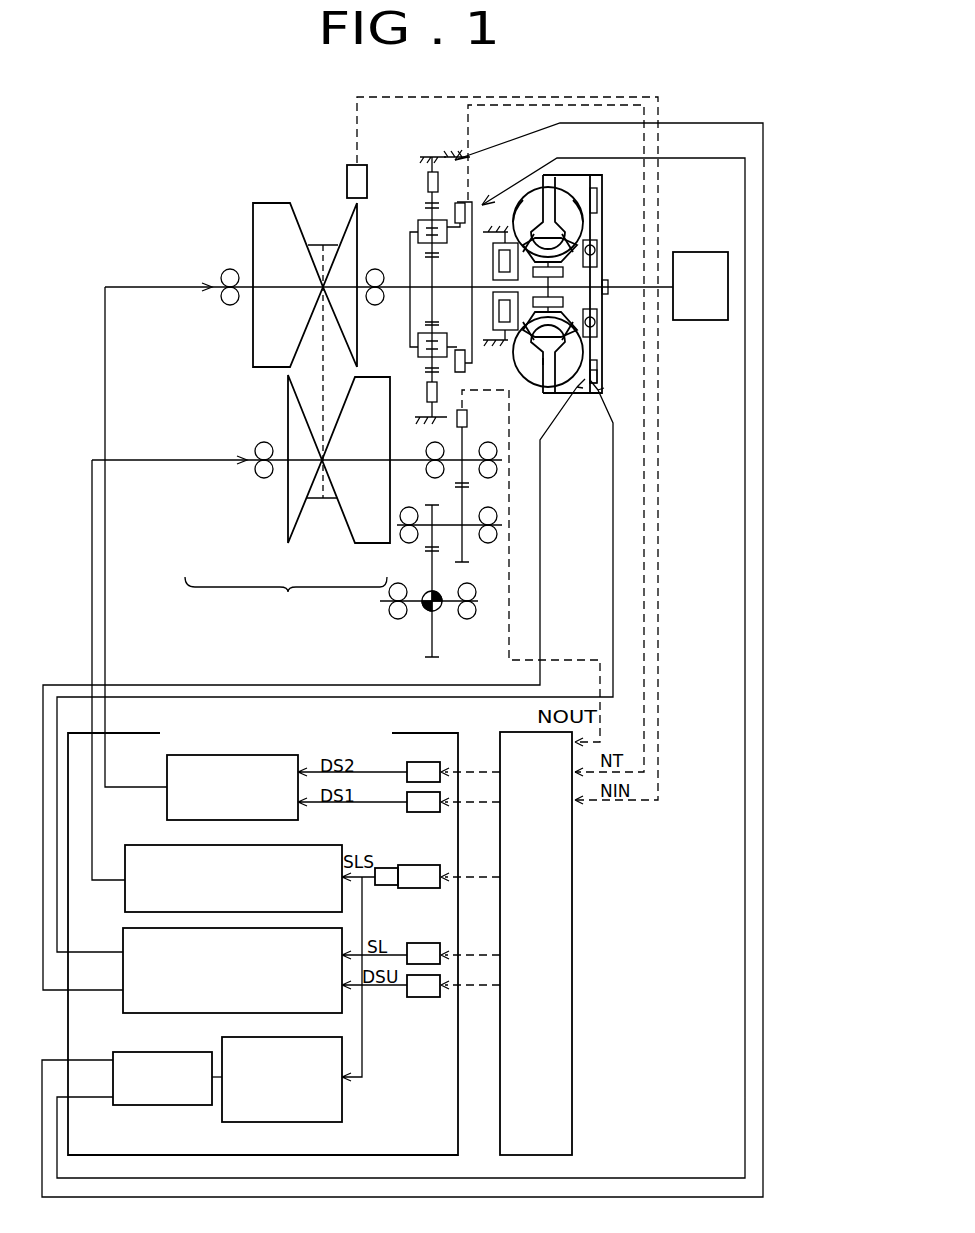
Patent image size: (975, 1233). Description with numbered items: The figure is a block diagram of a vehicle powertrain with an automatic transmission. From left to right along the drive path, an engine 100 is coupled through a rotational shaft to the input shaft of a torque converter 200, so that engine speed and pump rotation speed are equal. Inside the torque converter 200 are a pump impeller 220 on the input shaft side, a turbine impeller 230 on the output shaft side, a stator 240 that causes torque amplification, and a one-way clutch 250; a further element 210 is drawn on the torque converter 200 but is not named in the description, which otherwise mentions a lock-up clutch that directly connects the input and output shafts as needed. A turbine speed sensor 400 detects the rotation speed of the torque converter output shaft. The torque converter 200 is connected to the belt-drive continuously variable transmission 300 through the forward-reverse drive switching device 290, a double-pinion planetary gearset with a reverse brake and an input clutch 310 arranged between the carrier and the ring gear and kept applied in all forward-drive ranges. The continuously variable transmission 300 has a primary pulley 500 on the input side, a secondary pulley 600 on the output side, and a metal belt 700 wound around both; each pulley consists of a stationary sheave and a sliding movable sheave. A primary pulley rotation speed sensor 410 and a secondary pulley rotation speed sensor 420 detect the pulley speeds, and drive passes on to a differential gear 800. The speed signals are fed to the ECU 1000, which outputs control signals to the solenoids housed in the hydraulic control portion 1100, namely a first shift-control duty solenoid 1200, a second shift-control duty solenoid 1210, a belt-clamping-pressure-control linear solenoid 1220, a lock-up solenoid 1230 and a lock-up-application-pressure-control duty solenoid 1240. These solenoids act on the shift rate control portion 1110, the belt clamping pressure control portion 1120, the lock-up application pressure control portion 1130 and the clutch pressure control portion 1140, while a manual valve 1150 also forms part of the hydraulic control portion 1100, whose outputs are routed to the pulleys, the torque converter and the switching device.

The engine 100 is at (705, 252).
The torque converter 200 is at (603, 323).
The lock-up clutch 210 is at (600, 382).
The pump impeller 220 is at (528, 205).
The turbine impeller 230 is at (568, 200).
The stator 240 is at (560, 247).
The one-way clutch 250 is at (580, 277).
The forward-reverse drive switching device 290 is at (426, 178).
The belt-drive continuously variable transmission 300 is at (286, 601).
The input clutch 310 is at (455, 213).
The turbine speed sensor 400 is at (460, 155).
The primary pulley rotation speed sensor 410 is at (347, 181).
The secondary pulley rotation speed sensor 420 is at (467, 420).
The primary pulley 500 is at (268, 350).
The secondary pulley 600 is at (293, 505).
The metal belt 700 is at (287, 375).
The differential gear 800 is at (438, 617).
The ECU 1000 is at (572, 878).
The hydraulic control portion 1100 is at (400, 733).
The shift rate control portion 1110 is at (167, 800).
The belt clamping pressure control portion 1120 is at (125, 872).
The lock-up application pressure control portion 1130 is at (177, 1014).
The clutch pressure control portion 1140 is at (342, 1105).
The manual valve 1150 is at (148, 1105).
The first shift-control duty solenoid 1200 is at (425, 812).
The second shift-control duty solenoid 1210 is at (410, 764).
The belt-clamping-pressure-control linear solenoid 1220 is at (432, 888).
The lock-up solenoid 1230 is at (421, 955).
The lock-up-application-pressure-control duty solenoid 1240 is at (420, 997).